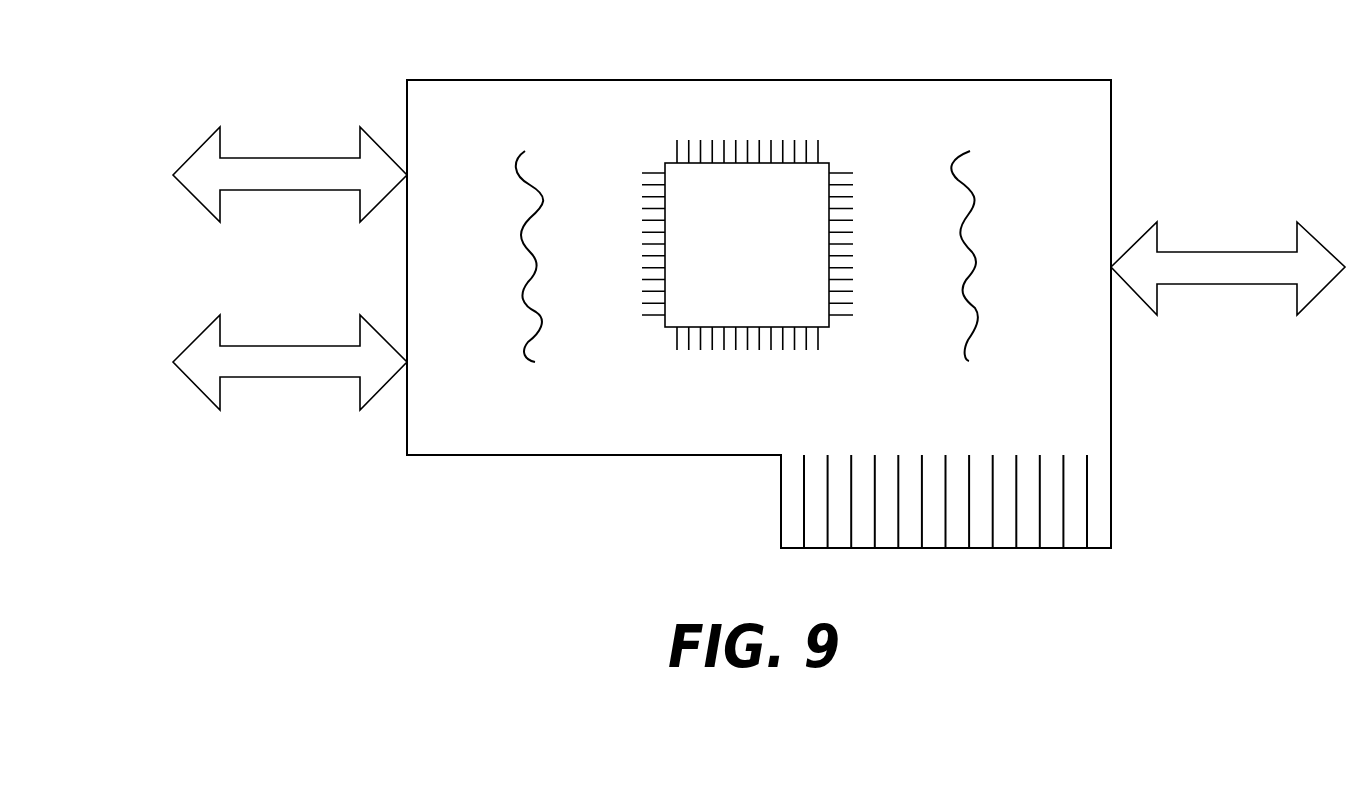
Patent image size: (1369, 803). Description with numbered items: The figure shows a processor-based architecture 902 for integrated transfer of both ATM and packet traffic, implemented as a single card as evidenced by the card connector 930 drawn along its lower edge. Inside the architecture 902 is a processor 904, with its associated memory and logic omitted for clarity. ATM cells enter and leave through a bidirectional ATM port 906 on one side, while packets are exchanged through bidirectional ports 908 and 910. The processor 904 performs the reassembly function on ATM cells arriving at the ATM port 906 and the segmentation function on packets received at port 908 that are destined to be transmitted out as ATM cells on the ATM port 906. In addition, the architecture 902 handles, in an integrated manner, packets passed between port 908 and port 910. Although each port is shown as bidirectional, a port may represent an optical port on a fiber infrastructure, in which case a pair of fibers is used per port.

The processor-based architecture 902 is at (1090, 413).
The processor 904 is at (687, 315).
The ATM port 906 is at (280, 163).
The port 908 is at (1220, 268).
The port 910 is at (280, 352).
The card connector 930 is at (793, 513).